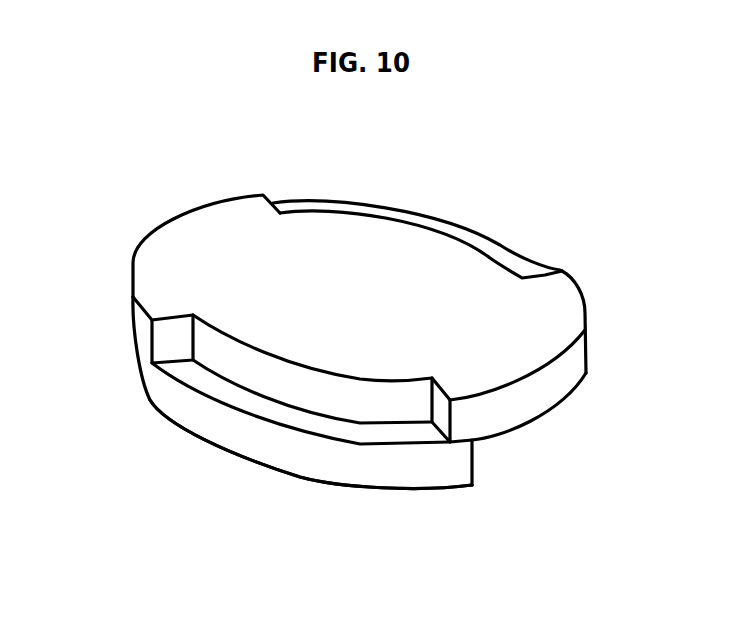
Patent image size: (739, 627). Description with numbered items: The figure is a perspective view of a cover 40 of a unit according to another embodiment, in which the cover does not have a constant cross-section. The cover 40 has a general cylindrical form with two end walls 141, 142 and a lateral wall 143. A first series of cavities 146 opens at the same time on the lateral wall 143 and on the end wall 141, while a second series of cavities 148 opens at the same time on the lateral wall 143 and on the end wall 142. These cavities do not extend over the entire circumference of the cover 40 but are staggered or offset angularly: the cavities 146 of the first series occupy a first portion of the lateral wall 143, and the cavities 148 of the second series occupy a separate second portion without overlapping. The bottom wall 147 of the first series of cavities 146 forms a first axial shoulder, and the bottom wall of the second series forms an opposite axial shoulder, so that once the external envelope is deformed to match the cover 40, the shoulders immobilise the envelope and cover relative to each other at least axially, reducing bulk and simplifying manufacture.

The cover 40 is at (128, 212).
The end wall 141 is at (318, 250).
The end wall 142 is at (263, 477).
The lateral wall 143 is at (562, 385).
The first series of cavities 146 is at (248, 397).
The bottom wall 147 is at (367, 436).
The second series of cavities 148 is at (130, 348).